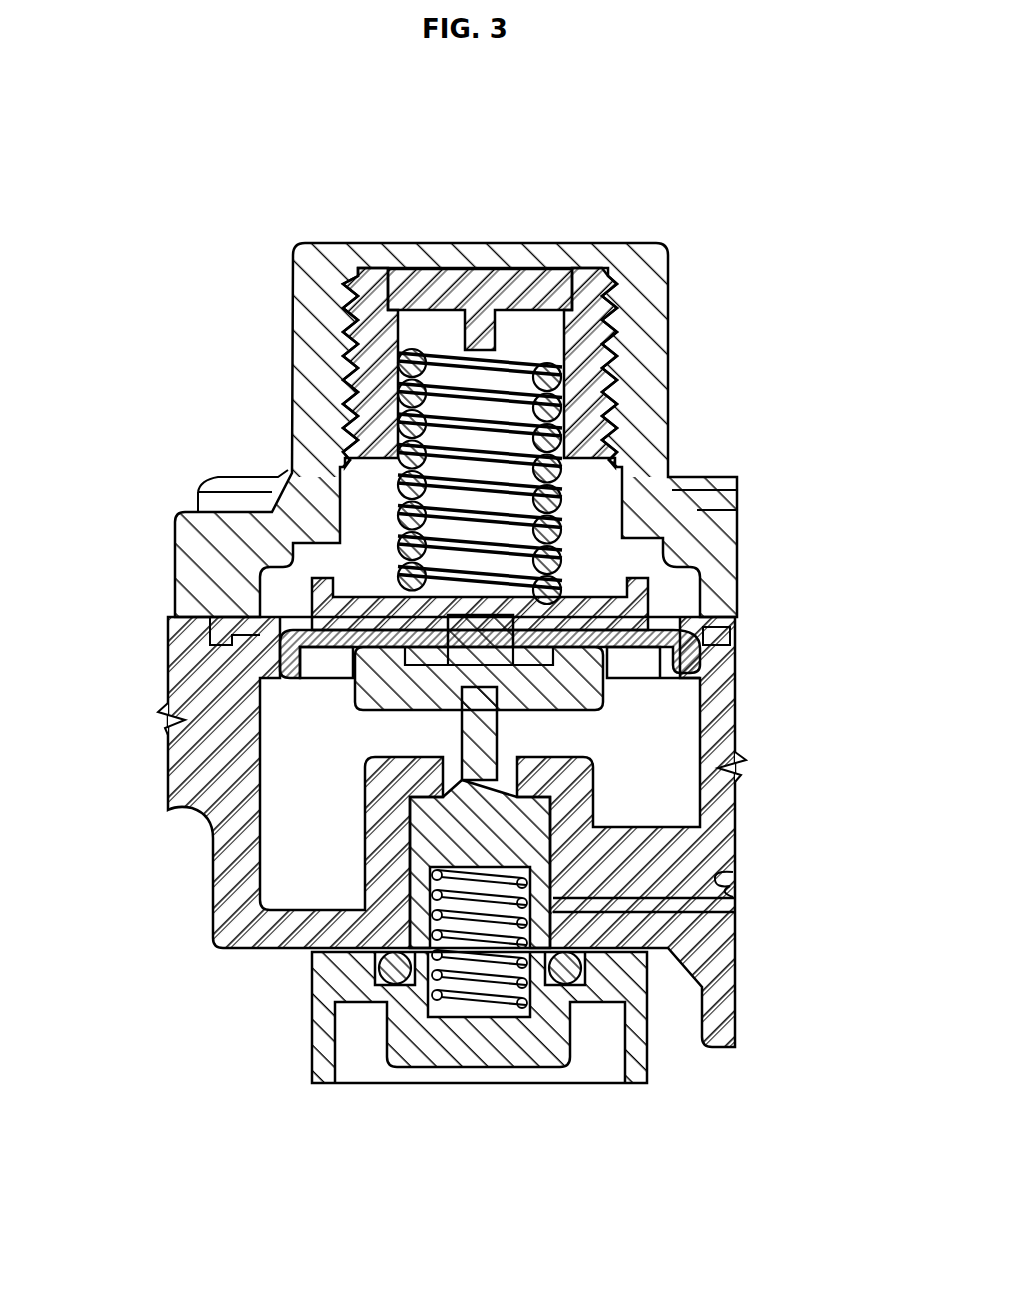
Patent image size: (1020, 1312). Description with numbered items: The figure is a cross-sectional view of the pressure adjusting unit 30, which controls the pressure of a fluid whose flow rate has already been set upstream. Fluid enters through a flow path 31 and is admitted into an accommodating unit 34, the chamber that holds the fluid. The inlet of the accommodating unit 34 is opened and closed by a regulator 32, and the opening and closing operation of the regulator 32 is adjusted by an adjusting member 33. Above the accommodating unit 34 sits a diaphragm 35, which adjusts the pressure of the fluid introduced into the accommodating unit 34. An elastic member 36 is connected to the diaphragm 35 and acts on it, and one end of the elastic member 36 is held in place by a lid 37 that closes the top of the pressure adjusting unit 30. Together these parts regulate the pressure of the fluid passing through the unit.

The pressure adjusting unit 30 is at (640, 168).
The flow path 31 is at (668, 905).
The regulator 32 is at (437, 843).
The adjusting member 33 is at (483, 1000).
The accommodating unit 34 is at (297, 765).
The diaphragm 35 is at (703, 632).
The elastic member 36 is at (556, 535).
The lid 37 is at (541, 333).